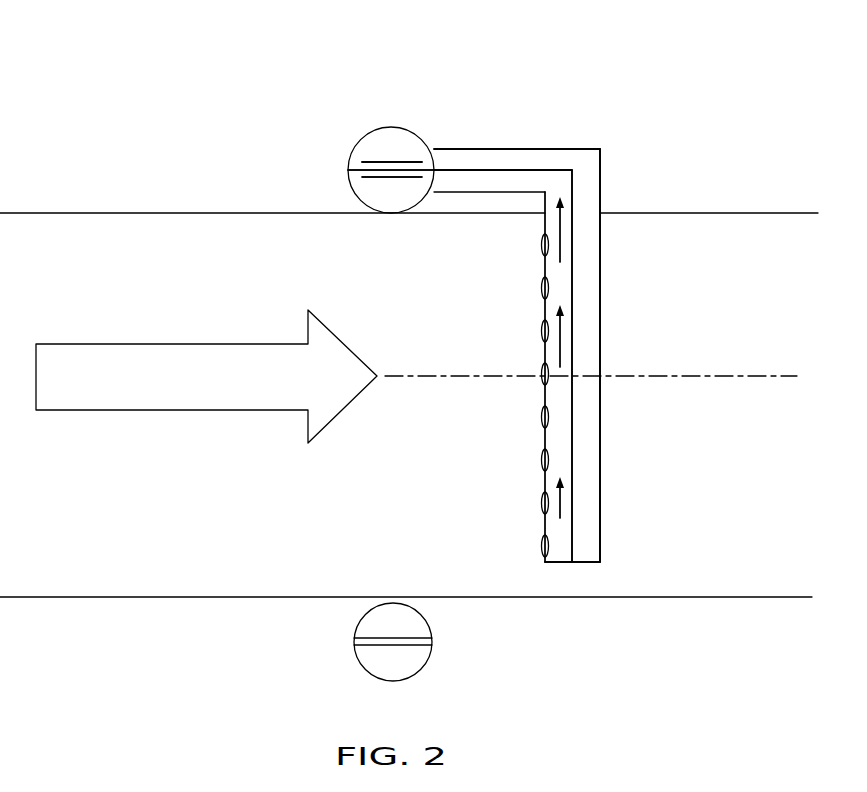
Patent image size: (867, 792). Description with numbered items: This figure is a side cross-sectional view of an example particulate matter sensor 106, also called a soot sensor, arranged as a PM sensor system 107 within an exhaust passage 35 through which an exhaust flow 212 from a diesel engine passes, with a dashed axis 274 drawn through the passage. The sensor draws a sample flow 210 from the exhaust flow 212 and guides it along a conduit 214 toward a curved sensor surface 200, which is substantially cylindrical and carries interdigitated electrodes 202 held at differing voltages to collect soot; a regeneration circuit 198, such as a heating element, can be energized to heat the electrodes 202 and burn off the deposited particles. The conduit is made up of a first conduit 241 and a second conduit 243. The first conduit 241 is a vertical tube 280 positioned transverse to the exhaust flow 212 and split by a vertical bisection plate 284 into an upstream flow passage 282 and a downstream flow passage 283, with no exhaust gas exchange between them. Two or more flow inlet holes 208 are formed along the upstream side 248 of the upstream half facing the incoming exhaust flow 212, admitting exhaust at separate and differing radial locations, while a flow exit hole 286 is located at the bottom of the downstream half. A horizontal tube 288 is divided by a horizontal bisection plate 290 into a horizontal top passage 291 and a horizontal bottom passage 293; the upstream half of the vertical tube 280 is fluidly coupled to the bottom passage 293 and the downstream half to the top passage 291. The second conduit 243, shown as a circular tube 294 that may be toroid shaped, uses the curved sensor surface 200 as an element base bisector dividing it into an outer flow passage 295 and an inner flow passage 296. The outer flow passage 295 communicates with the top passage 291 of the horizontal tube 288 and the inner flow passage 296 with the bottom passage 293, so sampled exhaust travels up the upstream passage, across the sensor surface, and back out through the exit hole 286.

The exhaust passage 35 is at (786, 213).
The particulate matter sensor 106 is at (625, 137).
The PM sensor system 107 is at (570, 310).
The regeneration circuit 198 is at (394, 160).
The curved sensor surface 200 is at (347, 170).
The interdigitated electrodes 202 is at (390, 184).
The flow inlet holes 208 is at (532, 248).
The sample flow 210 is at (555, 255).
The exhaust flow 212 is at (95, 343).
The conduit 214 is at (403, 200).
The first conduit 241 is at (610, 312).
The second conduit 243 is at (345, 152).
The upstream side 248 is at (545, 437).
The central axis 274 is at (773, 375).
The vertical tube 280 is at (600, 280).
The upstream flow passage 282 is at (557, 472).
The downstream flow passage 283 is at (588, 515).
The vertical bisection plate 284 is at (573, 540).
The flow exit hole 286 is at (605, 569).
The horizontal tube 288 is at (515, 140).
The horizontal bisection plate 290 is at (561, 160).
The horizontal top passage 291 is at (467, 157).
The horizontal bottom passage 293 is at (467, 183).
The circular tube 294 is at (384, 132).
The outer flow passage 295 is at (373, 147).
The inner flow passage 296 is at (373, 188).